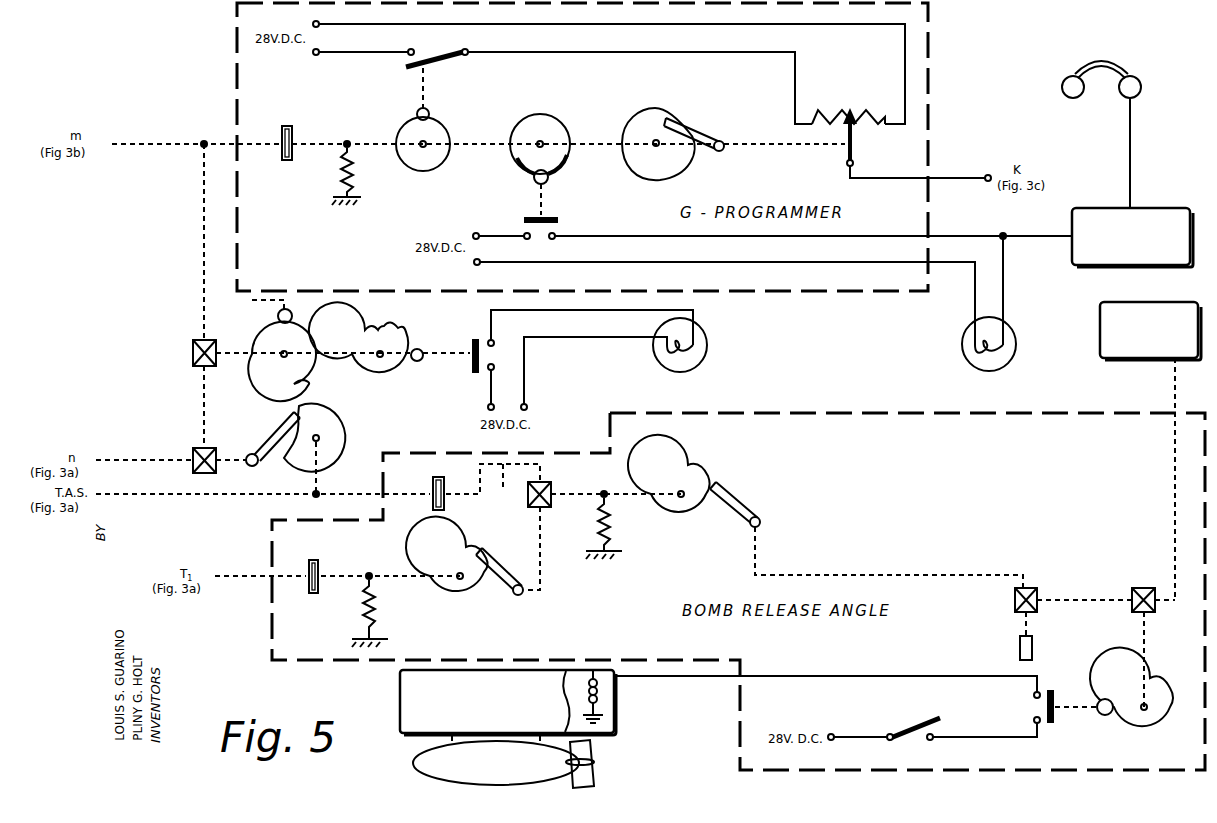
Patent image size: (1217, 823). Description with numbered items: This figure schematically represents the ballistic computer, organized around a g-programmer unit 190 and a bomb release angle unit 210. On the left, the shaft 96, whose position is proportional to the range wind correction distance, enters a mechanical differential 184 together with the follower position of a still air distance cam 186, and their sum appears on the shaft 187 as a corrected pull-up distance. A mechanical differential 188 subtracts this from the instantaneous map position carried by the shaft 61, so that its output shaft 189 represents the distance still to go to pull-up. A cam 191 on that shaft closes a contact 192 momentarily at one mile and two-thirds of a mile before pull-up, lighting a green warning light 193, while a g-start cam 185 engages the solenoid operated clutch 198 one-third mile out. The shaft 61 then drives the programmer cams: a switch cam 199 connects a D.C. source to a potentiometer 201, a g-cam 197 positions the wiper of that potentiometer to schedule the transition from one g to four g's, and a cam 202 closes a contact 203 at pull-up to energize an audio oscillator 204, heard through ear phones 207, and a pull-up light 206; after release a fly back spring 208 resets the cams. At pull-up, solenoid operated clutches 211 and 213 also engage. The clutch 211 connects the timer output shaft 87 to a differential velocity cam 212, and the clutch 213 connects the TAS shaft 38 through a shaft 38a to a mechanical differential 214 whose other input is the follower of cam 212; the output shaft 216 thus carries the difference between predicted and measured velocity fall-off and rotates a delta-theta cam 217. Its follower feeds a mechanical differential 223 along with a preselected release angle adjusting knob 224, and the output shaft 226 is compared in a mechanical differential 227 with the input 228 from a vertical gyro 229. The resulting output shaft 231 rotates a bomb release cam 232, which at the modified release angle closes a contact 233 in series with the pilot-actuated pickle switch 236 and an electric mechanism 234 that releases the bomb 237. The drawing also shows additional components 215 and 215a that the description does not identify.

The g-programmer unit 190 is at (228, 91).
The shaft 61 is at (176, 148).
The solenoid operated clutch 198 is at (291, 128).
The fly back spring 208 is at (340, 180).
The switch cam 199 is at (446, 124).
The cam 202 is at (566, 122).
The contact 203 is at (560, 216).
The g-cam 197 is at (636, 165).
The potentiometer 201 is at (855, 136).
The ear phones 207 is at (1066, 96).
The audio oscillator 204 is at (1150, 208).
The vertical gyro 229 is at (1122, 302).
The input 228 is at (1172, 508).
The pull-up light 206 is at (1010, 326).
The green warning light 193 is at (708, 347).
The contact 192 is at (471, 340).
The cam 191 is at (377, 330).
The g-start cam 185 is at (298, 332).
The output shaft 189 is at (239, 352).
The mechanical differential 188 is at (192, 353).
The shaft 187 is at (207, 403).
The mechanical differential 184 is at (204, 445).
The shaft 96 is at (131, 462).
The still air distance cam 186 is at (350, 425).
The TAS shaft 38 is at (134, 496).
The solenoid operated clutch 213 is at (433, 483).
The shaft 38a is at (493, 485).
The mechanical differential 214 is at (550, 483).
The output shaft 216 is at (585, 500).
The resistor 215a is at (612, 537).
The delta-theta cam 217 is at (687, 468).
The bomb release angle unit 210 is at (260, 654).
The timer output shaft 87 is at (244, 575).
The solenoid operated clutch 211 is at (318, 560).
The resistor 215 is at (377, 622).
The differential velocity cam 212 is at (447, 592).
The mechanical differential 223 is at (1015, 598).
The output shaft 226 is at (1076, 597).
The mechanical differential 227 is at (1141, 588).
The adjusting knob 224 is at (1033, 645).
The output shaft 231 is at (1147, 658).
The bomb release cam 232 is at (1133, 733).
The contact 233 is at (1058, 696).
The pickle switch 236 is at (910, 722).
The electric mechanism 234 is at (612, 706).
The bomb 237 is at (513, 768).